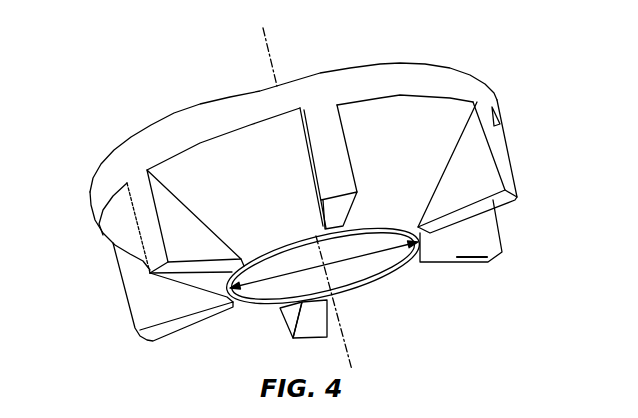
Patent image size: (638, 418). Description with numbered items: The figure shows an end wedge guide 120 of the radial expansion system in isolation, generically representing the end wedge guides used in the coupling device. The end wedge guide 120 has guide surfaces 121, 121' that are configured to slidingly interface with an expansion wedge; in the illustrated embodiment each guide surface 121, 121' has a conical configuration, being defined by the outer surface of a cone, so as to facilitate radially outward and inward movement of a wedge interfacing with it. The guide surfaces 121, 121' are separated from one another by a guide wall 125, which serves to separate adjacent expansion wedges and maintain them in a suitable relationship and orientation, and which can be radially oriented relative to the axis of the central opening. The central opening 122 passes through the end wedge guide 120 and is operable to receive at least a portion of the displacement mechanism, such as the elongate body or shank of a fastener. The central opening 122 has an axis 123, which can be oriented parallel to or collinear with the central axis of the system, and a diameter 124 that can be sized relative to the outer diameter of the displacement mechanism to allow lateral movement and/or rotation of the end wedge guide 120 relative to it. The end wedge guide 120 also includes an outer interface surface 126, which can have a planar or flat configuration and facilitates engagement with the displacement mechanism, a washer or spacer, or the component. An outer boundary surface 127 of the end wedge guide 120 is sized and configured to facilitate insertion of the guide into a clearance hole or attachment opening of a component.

The end wedge guide 120 is at (306, 199).
The guide surface 121 is at (178, 208).
The guide surface 121' is at (437, 148).
The central opening 122 is at (366, 271).
The axis 123 is at (338, 322).
The diameter 124 is at (282, 272).
The guide wall 125 is at (327, 143).
The outer interface surface 126 is at (138, 126).
The outer boundary surface 127 is at (475, 90).